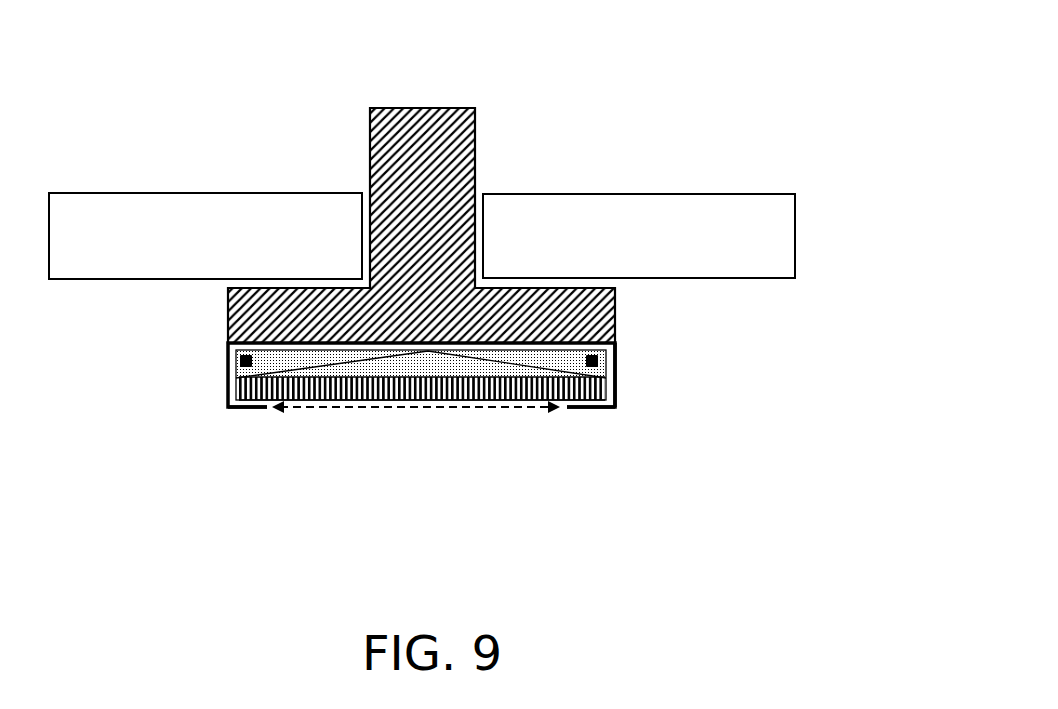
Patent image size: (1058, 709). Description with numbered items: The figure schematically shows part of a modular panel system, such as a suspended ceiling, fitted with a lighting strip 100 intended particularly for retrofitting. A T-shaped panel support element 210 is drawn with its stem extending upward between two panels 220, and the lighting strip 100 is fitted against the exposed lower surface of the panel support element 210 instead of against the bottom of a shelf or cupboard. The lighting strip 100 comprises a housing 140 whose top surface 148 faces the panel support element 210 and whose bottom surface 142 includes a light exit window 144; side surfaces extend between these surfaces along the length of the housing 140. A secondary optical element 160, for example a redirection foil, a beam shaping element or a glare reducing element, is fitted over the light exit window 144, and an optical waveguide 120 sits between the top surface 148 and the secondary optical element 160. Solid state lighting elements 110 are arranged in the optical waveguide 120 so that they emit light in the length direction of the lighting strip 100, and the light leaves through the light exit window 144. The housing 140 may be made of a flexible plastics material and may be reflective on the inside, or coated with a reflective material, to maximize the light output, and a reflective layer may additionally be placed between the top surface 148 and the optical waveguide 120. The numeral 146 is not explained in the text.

The lighting strip 100 is at (427, 422).
The solid state lighting elements 110 is at (240, 360).
The optical waveguide 120 is at (321, 365).
The housing 140 is at (615, 407).
The bottom surface 142 is at (588, 407).
The light exit window 144 is at (502, 407).
The frame side wall 146 is at (616, 392).
The top surface 148 is at (430, 350).
The secondary optical element 160 is at (361, 393).
The panel support element 210 is at (462, 131).
The support blocks 220 is at (720, 203).